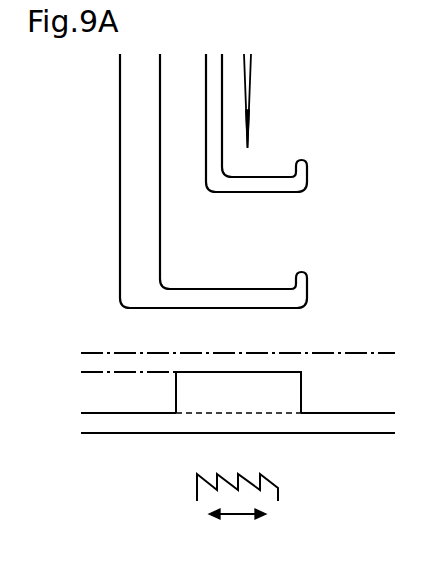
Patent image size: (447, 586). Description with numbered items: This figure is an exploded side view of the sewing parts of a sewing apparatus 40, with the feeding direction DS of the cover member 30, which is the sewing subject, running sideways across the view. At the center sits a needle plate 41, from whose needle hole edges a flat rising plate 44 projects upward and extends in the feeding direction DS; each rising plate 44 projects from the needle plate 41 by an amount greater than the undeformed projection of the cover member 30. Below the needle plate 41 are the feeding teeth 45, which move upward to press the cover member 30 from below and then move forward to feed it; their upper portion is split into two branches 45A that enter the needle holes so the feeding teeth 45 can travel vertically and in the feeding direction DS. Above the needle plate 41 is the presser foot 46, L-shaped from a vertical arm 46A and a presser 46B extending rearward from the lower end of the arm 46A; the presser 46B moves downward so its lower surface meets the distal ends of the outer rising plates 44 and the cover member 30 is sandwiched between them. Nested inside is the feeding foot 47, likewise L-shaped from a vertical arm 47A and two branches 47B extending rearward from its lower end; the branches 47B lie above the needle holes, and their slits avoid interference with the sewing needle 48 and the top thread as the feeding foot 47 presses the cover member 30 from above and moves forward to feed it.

The cover member 30 is at (367, 353).
The sewing apparatus 40 is at (328, 75).
The needle plate 41 is at (98, 413).
The rising plate 44 is at (176, 396).
The feeding teeth 45 is at (303, 489).
The branch 45A is at (279, 495).
The presser foot 46 is at (236, 203).
The arm 46A is at (148, 215).
The presser 46B is at (203, 297).
The feeding foot 47 is at (315, 87).
The arm 47A is at (221, 95).
The branch 47B is at (262, 175).
The sewing needle 48 is at (251, 69).
The feeding direction DS is at (236, 517).